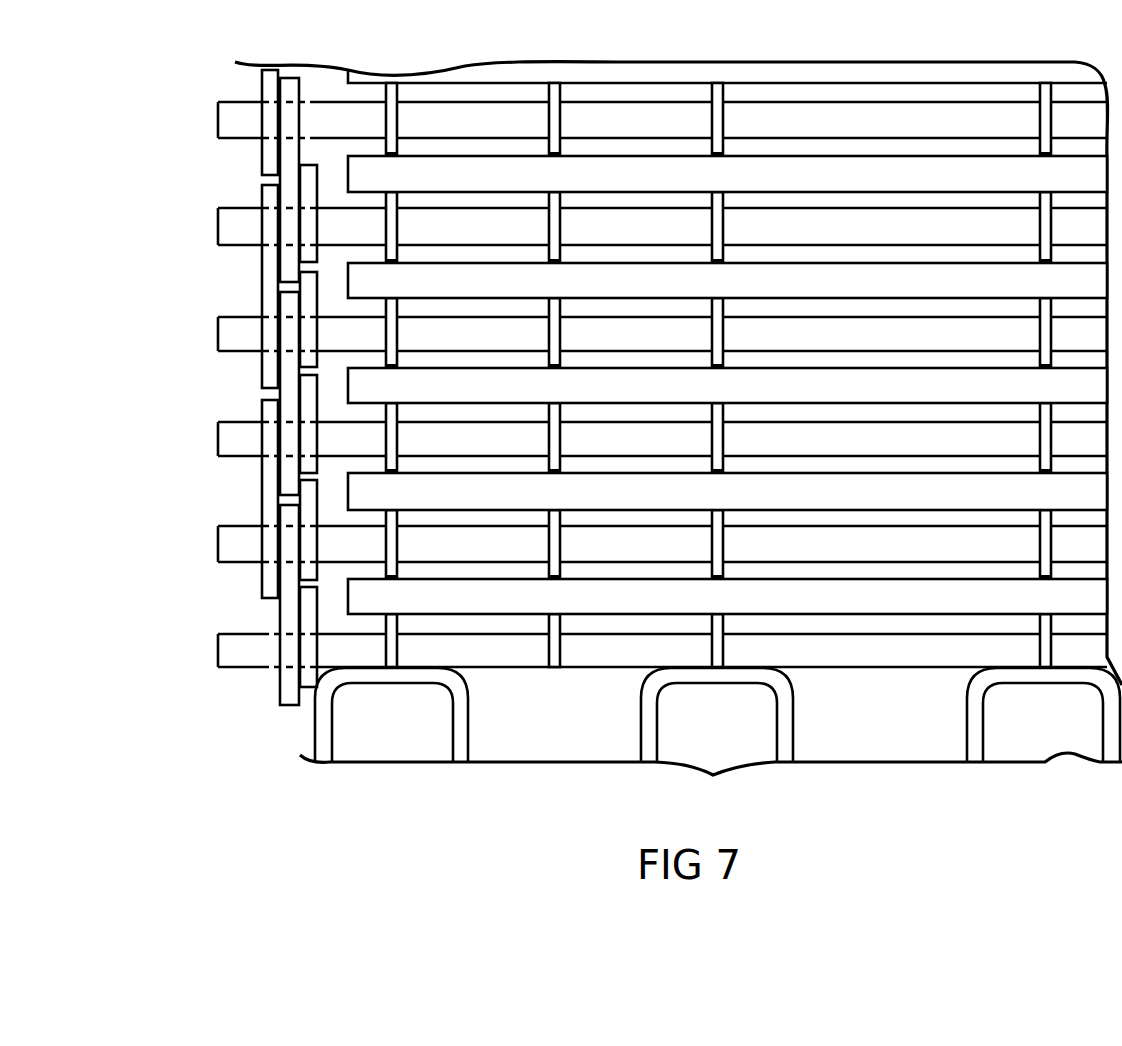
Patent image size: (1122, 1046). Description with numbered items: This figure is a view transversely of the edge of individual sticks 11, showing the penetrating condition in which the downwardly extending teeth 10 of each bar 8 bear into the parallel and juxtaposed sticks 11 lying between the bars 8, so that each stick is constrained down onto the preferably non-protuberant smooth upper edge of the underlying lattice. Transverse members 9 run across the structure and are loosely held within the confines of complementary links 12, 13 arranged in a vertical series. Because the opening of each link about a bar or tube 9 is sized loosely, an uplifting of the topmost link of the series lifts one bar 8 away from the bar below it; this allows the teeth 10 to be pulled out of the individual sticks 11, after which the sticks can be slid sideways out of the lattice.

The bar 8 is at (717, 440).
The transverse member 9 is at (243, 537).
The tooth 10 is at (723, 468).
The stick 11 is at (727, 385).
The link 12 is at (288, 610).
The link 13 is at (268, 587).